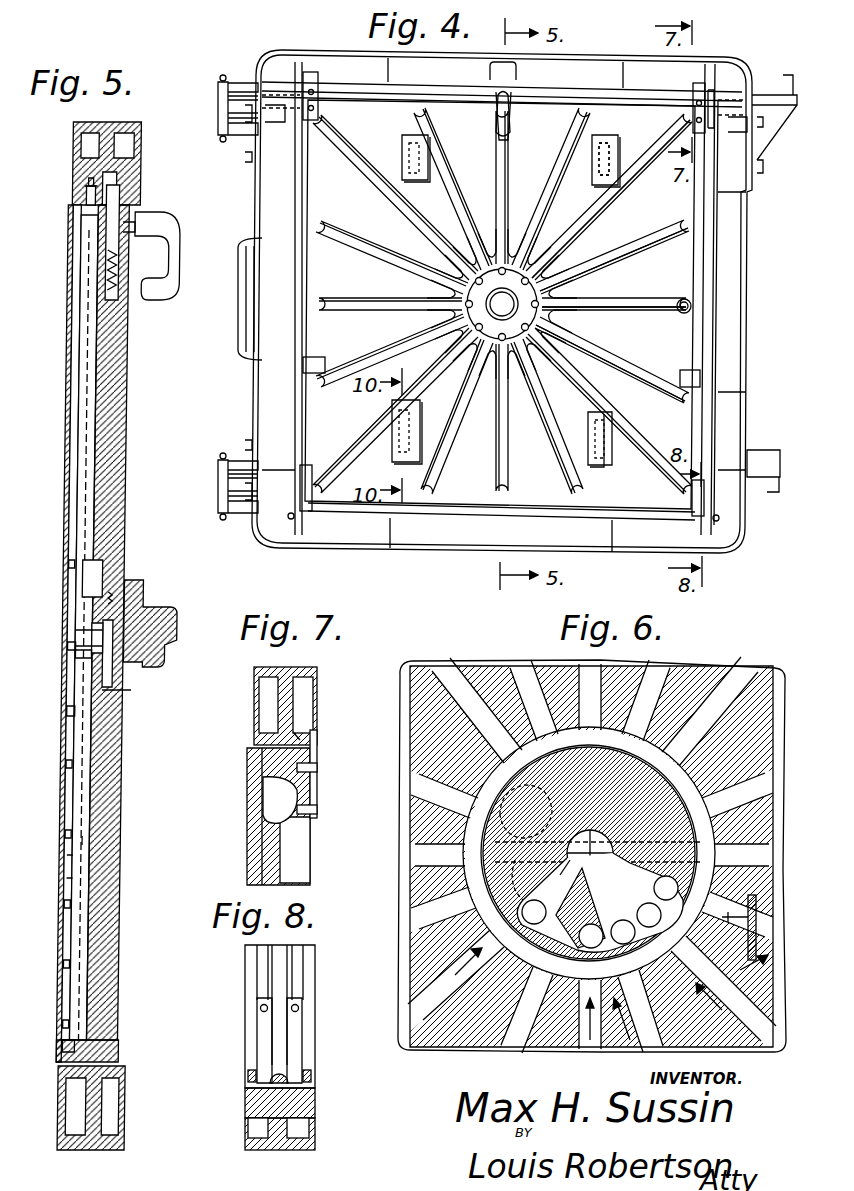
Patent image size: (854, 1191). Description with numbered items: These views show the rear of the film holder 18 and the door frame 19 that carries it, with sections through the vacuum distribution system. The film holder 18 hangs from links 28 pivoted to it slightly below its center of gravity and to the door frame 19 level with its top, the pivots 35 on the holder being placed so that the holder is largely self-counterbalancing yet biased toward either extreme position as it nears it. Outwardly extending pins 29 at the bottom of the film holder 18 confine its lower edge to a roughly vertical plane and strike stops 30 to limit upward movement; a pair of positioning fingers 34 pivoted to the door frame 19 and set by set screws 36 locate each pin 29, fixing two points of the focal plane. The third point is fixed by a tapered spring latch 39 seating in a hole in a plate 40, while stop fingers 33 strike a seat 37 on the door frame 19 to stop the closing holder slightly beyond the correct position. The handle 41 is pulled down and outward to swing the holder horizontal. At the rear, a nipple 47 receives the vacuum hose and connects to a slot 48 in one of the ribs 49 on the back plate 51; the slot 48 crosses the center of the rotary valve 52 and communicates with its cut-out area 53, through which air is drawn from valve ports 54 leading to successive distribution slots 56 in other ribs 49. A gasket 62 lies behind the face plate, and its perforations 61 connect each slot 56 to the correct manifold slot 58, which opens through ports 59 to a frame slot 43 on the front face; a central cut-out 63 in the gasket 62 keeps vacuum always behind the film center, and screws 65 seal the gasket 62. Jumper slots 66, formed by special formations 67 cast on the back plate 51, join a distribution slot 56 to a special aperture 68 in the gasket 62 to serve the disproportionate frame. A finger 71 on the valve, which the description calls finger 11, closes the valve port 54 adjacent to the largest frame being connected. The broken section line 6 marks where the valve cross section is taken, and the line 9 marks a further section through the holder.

In FIG. 5, the channel 6 is at (96, 525).
In FIG. 5, the bore 9 is at (96, 322).
In FIG. 5, the finger 11 is at (78, 284).
In FIG. 4, the film holder 18 is at (680, 252).
In FIG. 4, the film holder door frame 19 is at (745, 215).
In FIG. 8, the film holder door frame 19 is at (305, 975).
In FIG. 4, the links 28 is at (318, 255).
In FIG. 4, the pins 29 is at (306, 490).
In FIG. 8, the pins 29 is at (300, 1088).
In FIG. 4, the stops 30 is at (272, 300).
In FIG. 4, the stop fingers 33 is at (318, 78).
In FIG. 7, the stop fingers 33 is at (320, 748).
In FIG. 8, the positioning fingers 34 is at (262, 1042).
In FIG. 4, the pivots 35 is at (325, 358).
In FIG. 4, the set screws 36 is at (289, 520).
In FIG. 8, the set screws 36 is at (248, 1076).
In FIG. 4, the seat 37 is at (690, 90).
In FIG. 7, the seat 37 is at (300, 738).
In FIG. 5, the tapered spring latch 39 is at (138, 206).
In FIG. 5, the plate 40 is at (86, 200).
In FIG. 5, the handle 41 is at (168, 234).
In FIG. 5, the frame slots 43 is at (68, 968).
In FIG. 4, the nipple 47 is at (681, 299).
In FIG. 5, the slot 48 is at (78, 626).
In FIG. 6, the slot 48 is at (410, 862).
In FIG. 4, the ribs 49 is at (608, 298).
In FIG. 7, the ribs 49 is at (292, 810).
In FIG. 4, the back plate 51 is at (680, 340).
In FIG. 4, the rotary valve 52 is at (575, 265).
In FIG. 5, the rotary valve 52 is at (150, 606).
In FIG. 6, the rotary valve 52 is at (715, 793).
In FIG. 5, the cut-out area 53 is at (140, 672).
In FIG. 6, the cut-out area 53 is at (600, 902).
In FIG. 6, the valve ports 54 is at (548, 900).
In FIG. 5, the distribution slots 56 is at (95, 836).
In FIG. 6, the distribution slots 56 is at (430, 935).
In FIG. 5, the manifold slots 58 is at (78, 606).
In FIG. 5, the ports 59 is at (76, 645).
In FIG. 6, the ports 59 is at (562, 872).
In FIG. 5, the perforations 61 is at (80, 880).
In FIG. 5, the gasket 62 is at (80, 858).
In FIG. 6, the gasket 62 is at (410, 780).
In FIG. 5, the central cut-out 63 is at (78, 658).
In FIG. 5, the screws 65 is at (76, 1046).
In FIG. 4, the jumper slots 66 is at (425, 172).
In FIG. 4, the special formations 67 is at (402, 142).
In FIG. 4, the special aperture 68 is at (604, 159).
In FIG. 6, the plate 71 is at (583, 908).